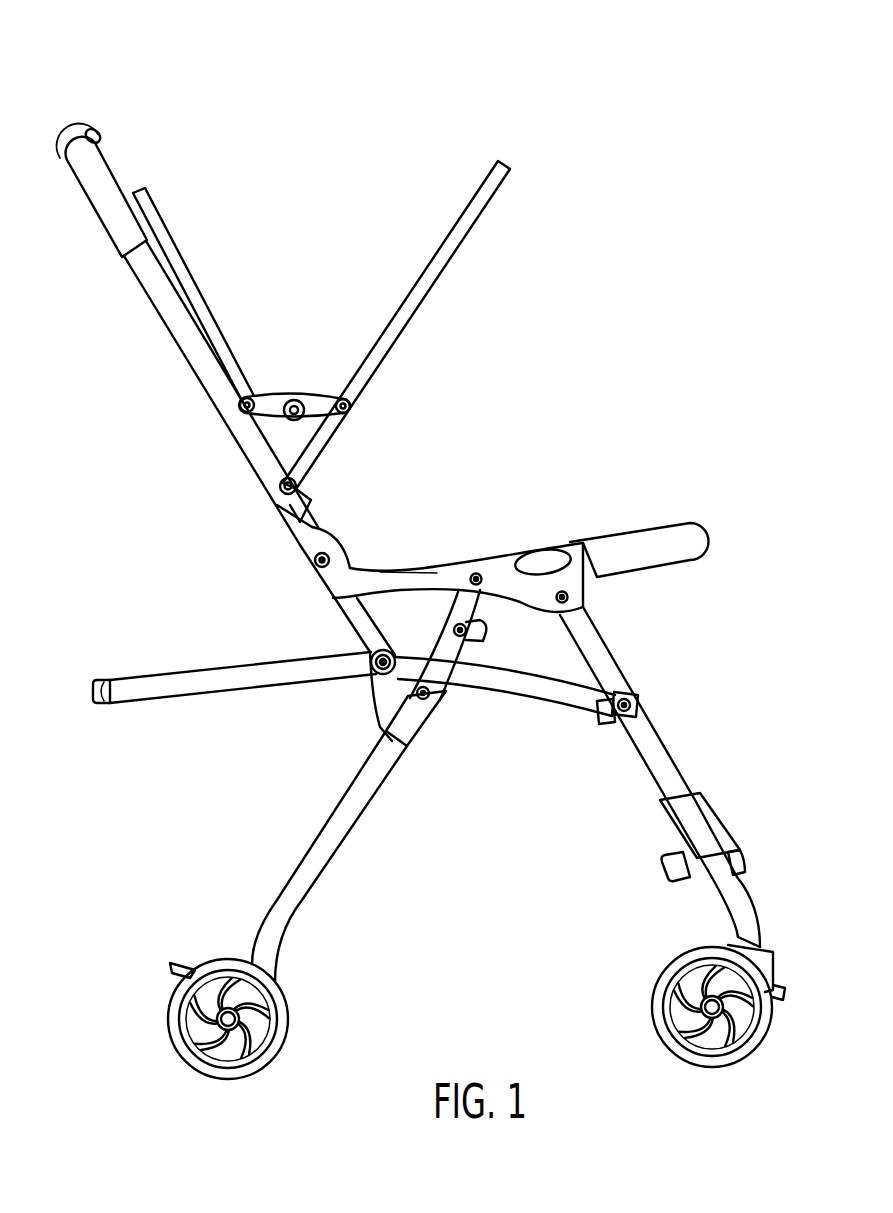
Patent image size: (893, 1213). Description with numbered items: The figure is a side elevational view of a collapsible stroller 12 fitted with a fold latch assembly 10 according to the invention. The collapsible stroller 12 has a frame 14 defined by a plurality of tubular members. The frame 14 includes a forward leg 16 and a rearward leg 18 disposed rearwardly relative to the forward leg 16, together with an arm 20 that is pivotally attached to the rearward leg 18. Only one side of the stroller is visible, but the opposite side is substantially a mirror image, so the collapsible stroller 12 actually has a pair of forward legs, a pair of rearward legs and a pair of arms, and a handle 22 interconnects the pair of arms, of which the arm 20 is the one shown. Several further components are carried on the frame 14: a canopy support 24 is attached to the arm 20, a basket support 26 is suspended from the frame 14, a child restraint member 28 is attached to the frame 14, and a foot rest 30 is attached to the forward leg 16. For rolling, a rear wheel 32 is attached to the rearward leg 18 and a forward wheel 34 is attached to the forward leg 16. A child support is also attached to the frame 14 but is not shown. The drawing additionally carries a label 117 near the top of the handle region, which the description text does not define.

The fold latch assembly 10 is at (442, 732).
The collapsible stroller 12 is at (583, 250).
The frame 14 is at (637, 353).
The forward leg 16 is at (657, 747).
The rearward leg 18 is at (283, 902).
The arm 20 is at (140, 276).
The handle 22 is at (72, 150).
The canopy support 24 is at (300, 213).
The basket support 26 is at (147, 677).
The child restraint member 28 is at (653, 535).
The foot rest 30 is at (697, 823).
The rear wheel 32 is at (172, 1018).
The forward wheel 34 is at (750, 1053).
The button 117 is at (72, 133).